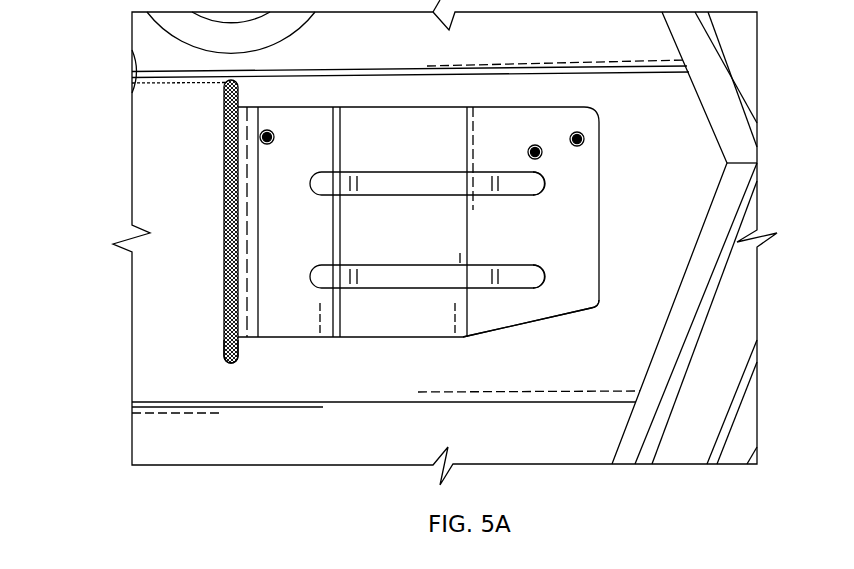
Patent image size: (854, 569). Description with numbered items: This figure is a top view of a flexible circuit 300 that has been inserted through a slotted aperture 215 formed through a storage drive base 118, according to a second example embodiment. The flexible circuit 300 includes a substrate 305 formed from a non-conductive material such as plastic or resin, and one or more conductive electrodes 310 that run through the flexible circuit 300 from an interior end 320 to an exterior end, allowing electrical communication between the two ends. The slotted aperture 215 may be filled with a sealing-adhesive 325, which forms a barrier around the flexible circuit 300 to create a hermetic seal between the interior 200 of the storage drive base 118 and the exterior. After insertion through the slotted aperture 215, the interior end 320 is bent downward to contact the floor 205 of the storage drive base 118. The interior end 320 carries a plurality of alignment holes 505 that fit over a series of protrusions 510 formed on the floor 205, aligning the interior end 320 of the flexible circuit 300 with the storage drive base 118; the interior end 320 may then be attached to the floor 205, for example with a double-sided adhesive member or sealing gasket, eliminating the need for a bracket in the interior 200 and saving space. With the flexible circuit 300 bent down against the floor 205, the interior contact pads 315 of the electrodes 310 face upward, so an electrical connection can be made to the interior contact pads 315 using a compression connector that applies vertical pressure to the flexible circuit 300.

The storage drive base 118 is at (172, 362).
The interior 200 is at (371, 386).
The floor 205 is at (285, 438).
The slotted aperture 215 is at (229, 92).
The flexible circuit 300 is at (448, 228).
The substrate 305 is at (599, 252).
The conductive electrodes 310 is at (409, 192).
The interior contact pads 315 is at (525, 183).
The interior end 320 is at (584, 309).
The sealing-adhesive 325 is at (227, 345).
The alignment holes 505 is at (278, 136).
The protrusions 510 is at (267, 146).